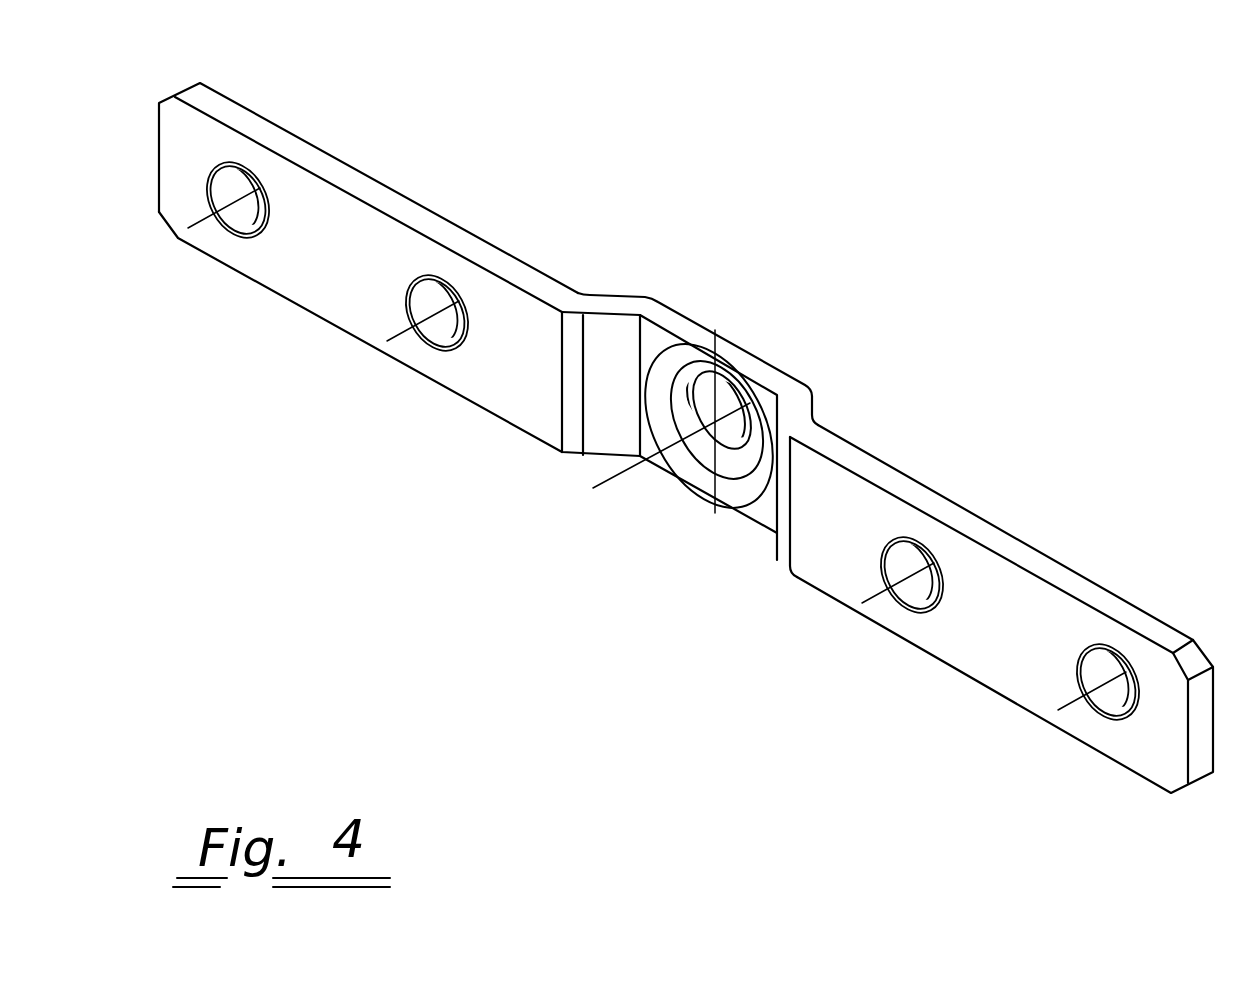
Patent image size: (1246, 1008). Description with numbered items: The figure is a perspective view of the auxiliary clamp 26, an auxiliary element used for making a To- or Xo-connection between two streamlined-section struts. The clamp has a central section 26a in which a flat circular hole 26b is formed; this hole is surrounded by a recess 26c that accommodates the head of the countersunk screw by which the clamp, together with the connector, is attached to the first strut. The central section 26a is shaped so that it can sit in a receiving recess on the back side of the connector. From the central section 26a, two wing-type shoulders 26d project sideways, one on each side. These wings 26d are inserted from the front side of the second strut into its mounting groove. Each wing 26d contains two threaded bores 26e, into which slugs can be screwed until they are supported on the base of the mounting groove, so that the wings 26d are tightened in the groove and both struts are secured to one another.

The auxiliary clamp 26 is at (797, 213).
The central section 26a is at (676, 322).
The flat circular hole 26b is at (722, 388).
The recess 26c is at (693, 470).
The wing-type shoulders 26d is at (368, 217).
The threaded bores 26e is at (442, 333).